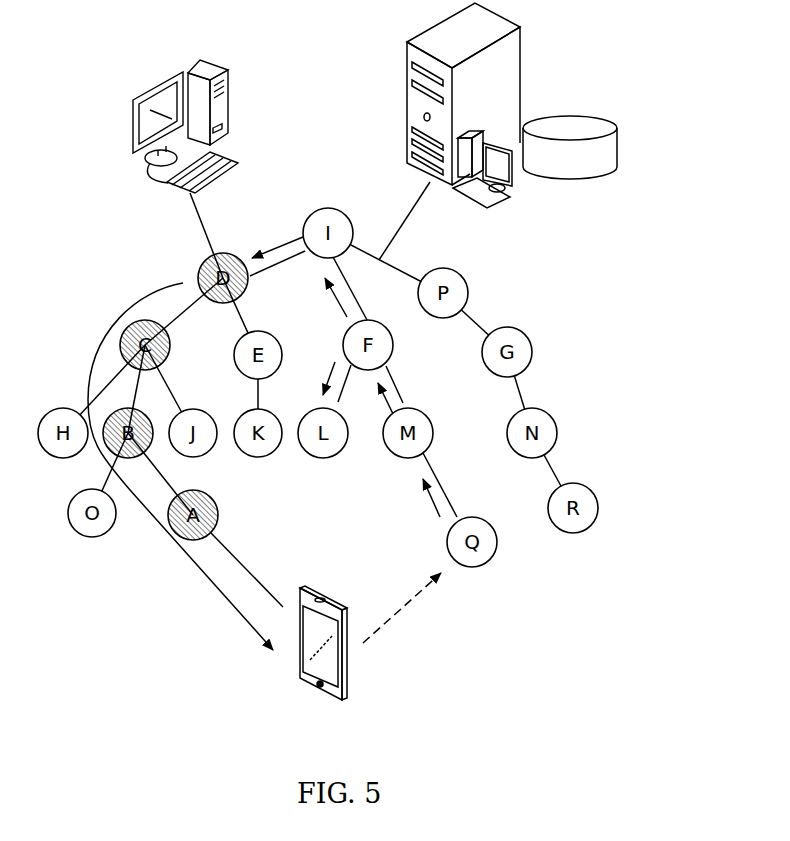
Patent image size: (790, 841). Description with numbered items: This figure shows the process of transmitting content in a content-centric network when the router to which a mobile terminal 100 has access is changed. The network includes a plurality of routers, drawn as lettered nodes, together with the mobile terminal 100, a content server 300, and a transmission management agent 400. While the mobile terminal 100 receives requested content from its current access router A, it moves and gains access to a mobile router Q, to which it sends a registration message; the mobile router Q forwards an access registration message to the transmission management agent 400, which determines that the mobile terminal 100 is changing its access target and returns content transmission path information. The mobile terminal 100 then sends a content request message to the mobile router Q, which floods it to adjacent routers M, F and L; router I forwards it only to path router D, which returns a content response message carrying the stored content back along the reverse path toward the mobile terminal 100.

The mobile terminal 100 is at (348, 662).
The content server 300 is at (230, 103).
The transmission management agent 400 is at (520, 65).